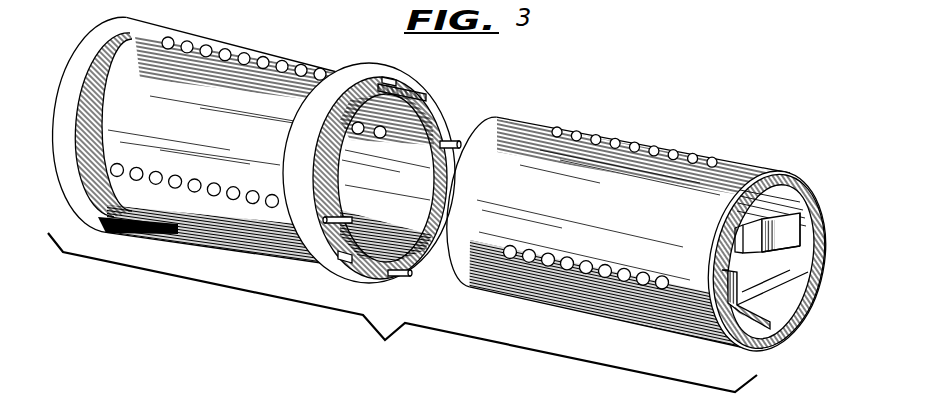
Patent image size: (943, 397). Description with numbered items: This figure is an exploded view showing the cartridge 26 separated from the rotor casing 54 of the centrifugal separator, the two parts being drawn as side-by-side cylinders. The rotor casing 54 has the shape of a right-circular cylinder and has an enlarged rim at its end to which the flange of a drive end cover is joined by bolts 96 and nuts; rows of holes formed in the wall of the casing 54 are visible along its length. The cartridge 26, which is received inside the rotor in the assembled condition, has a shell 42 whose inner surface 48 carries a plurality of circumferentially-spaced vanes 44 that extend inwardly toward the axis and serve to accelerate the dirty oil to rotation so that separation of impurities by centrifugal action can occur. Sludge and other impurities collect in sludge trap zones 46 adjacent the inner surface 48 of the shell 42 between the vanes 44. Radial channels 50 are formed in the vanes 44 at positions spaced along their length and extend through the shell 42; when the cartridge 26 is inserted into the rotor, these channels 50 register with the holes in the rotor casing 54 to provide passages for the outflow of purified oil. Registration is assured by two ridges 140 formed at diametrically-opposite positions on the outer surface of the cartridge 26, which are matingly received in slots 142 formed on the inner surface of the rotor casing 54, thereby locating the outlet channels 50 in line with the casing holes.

The cartridge 26 is at (709, 147).
The shell 42 is at (792, 150).
The vanes 44 is at (742, 221).
The sludge trap zones 46 is at (808, 249).
The inner surface 48 is at (795, 290).
The radial channels 50 is at (624, 121).
The rotor casing 54 is at (194, 126).
The bolts 96 is at (408, 63).
The ridges 140 is at (648, 231).
The slots 142 is at (422, 99).